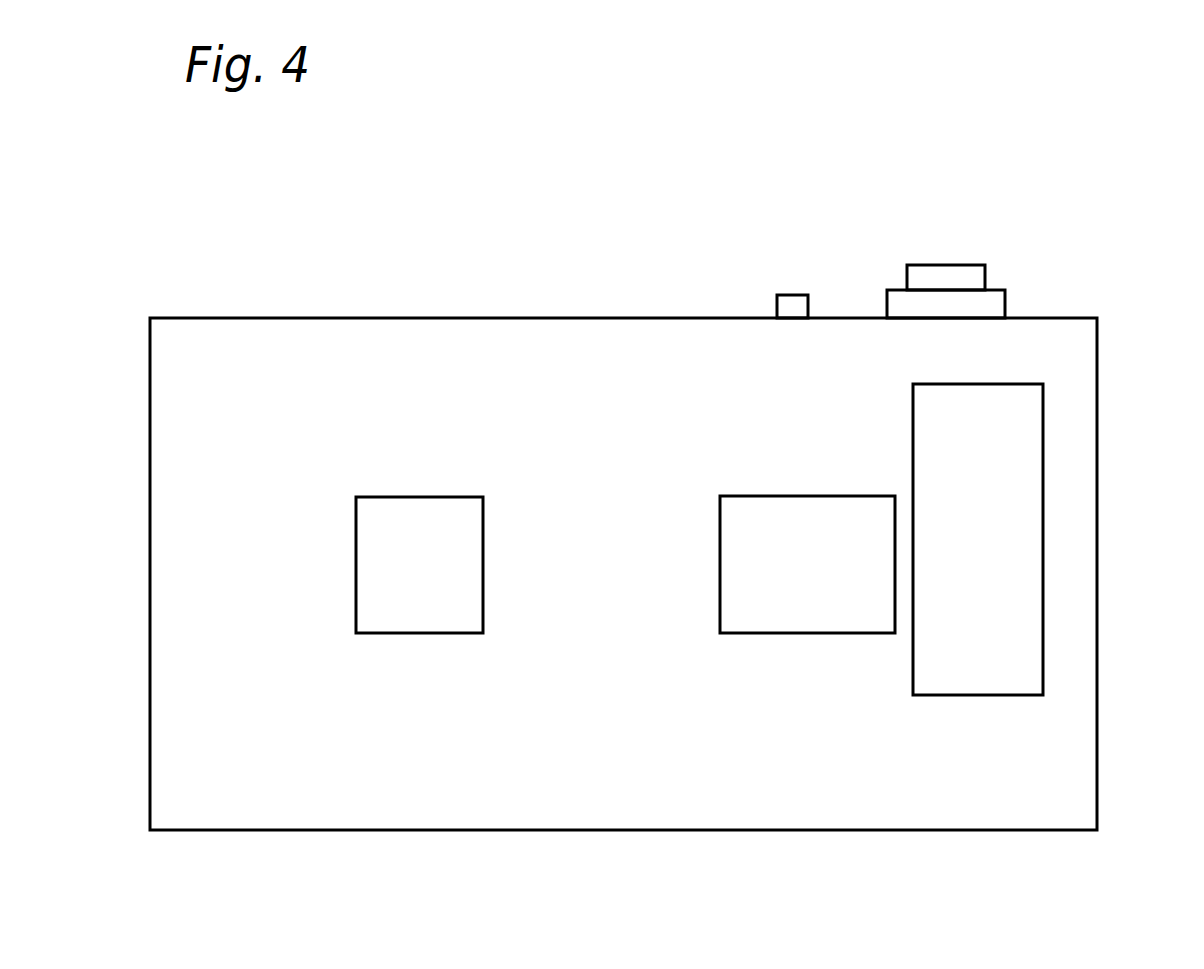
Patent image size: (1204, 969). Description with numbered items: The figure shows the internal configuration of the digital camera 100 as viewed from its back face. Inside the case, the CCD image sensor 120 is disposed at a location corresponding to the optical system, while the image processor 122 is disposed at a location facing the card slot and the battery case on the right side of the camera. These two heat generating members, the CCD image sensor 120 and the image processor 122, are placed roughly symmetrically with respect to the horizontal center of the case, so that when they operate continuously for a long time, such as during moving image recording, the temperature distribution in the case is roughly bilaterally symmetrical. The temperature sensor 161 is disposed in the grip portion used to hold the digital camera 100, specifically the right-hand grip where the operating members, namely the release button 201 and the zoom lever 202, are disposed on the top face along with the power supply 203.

The digital camera 100 is at (248, 223).
The CCD image sensor 120 is at (393, 633).
The image processor 122 is at (818, 633).
The temperature sensor 161 is at (1043, 533).
The release button 201 is at (972, 275).
The zoom lever 202 is at (993, 307).
The power supply 203 is at (780, 293).